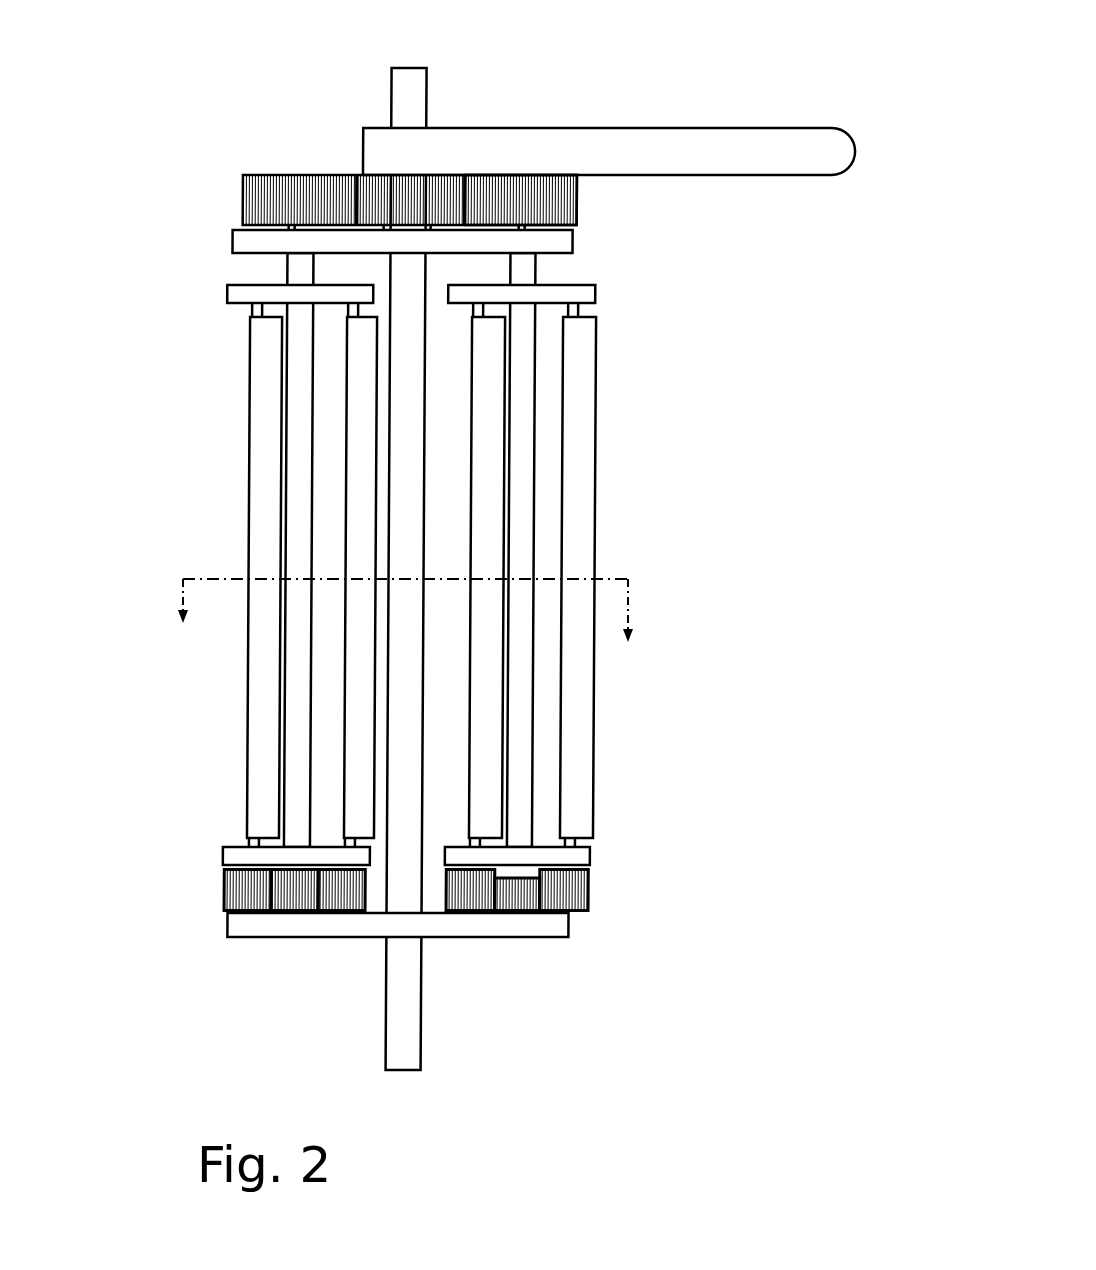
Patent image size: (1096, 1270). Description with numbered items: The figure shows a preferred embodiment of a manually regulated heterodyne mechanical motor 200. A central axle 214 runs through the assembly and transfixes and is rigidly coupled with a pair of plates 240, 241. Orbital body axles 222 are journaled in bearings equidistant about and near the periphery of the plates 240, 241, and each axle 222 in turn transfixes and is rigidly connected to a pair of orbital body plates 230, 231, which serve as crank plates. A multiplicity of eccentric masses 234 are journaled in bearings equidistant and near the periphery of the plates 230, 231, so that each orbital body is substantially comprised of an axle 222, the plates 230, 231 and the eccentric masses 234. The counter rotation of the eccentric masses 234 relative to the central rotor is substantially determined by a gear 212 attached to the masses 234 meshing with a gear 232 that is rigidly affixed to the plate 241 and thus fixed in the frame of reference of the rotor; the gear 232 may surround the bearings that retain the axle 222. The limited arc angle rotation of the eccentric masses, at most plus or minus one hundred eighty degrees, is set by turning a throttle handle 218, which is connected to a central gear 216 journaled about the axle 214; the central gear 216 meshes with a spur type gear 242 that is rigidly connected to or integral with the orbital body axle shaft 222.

The magnetic actuator assembly 200 is at (444, 538).
The gear 212 is at (553, 898).
The central axle 214 is at (410, 1030).
The central gear 216 is at (393, 192).
The throttle handle 218 is at (562, 152).
The axle 222 is at (522, 802).
The orbital body plate 230 is at (224, 854).
The orbital body plate 231 is at (302, 292).
The gear 232 is at (530, 873).
The eccentric masses 234 is at (582, 460).
The plate 240 is at (547, 240).
The plate 241 is at (542, 927).
The spur type gear 242 is at (547, 193).